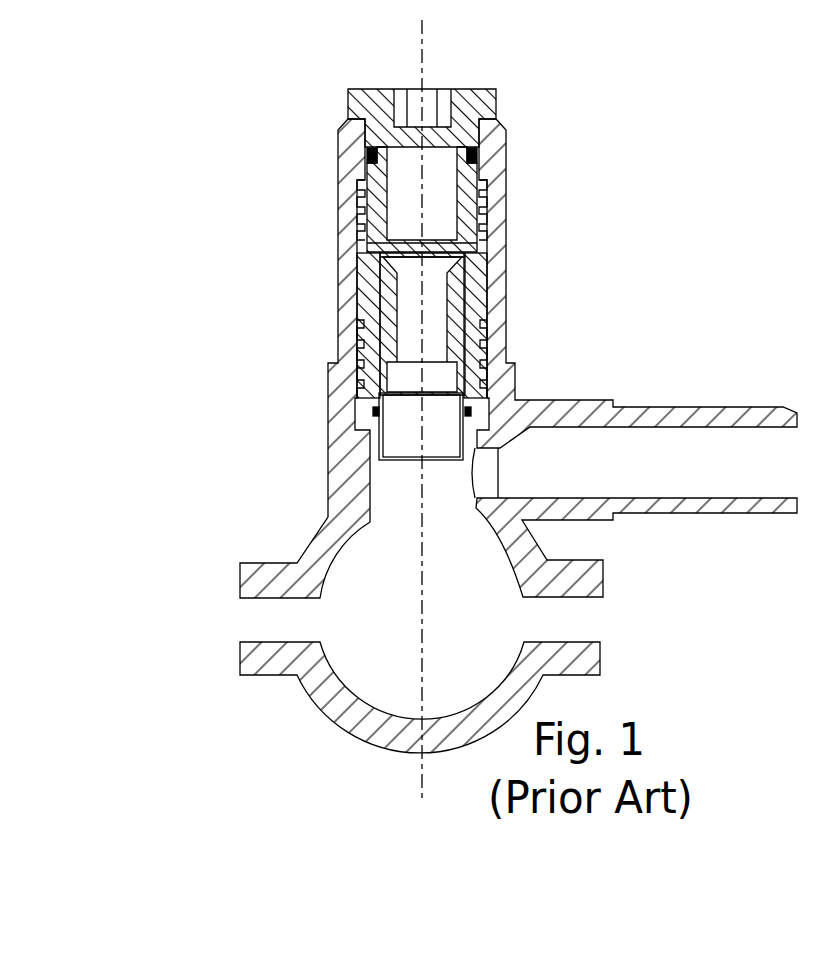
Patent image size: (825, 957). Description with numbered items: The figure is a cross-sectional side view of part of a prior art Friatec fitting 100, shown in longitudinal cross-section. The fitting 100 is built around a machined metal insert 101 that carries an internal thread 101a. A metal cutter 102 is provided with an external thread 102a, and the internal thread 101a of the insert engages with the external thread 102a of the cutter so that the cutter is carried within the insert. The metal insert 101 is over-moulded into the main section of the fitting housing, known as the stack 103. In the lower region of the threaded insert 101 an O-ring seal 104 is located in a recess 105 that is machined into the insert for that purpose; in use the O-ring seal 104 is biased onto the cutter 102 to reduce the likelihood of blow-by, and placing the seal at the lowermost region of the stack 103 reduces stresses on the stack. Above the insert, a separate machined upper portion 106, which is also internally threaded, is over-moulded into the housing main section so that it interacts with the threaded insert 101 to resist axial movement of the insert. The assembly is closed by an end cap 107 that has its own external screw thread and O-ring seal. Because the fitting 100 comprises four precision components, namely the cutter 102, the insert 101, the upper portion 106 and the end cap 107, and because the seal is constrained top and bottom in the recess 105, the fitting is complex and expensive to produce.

The fitting 100 is at (283, 234).
The metal insert 101 is at (487, 335).
The internal thread 101a is at (465, 257).
The metal cutter 102 is at (353, 338).
The external thread 102a is at (340, 312).
The fitting housing main section (stack) 103 is at (507, 303).
The O-ring seal 104 is at (373, 412).
The recess 105 is at (472, 402).
The upper portion 106 is at (487, 222).
The end cap 107 is at (496, 90).